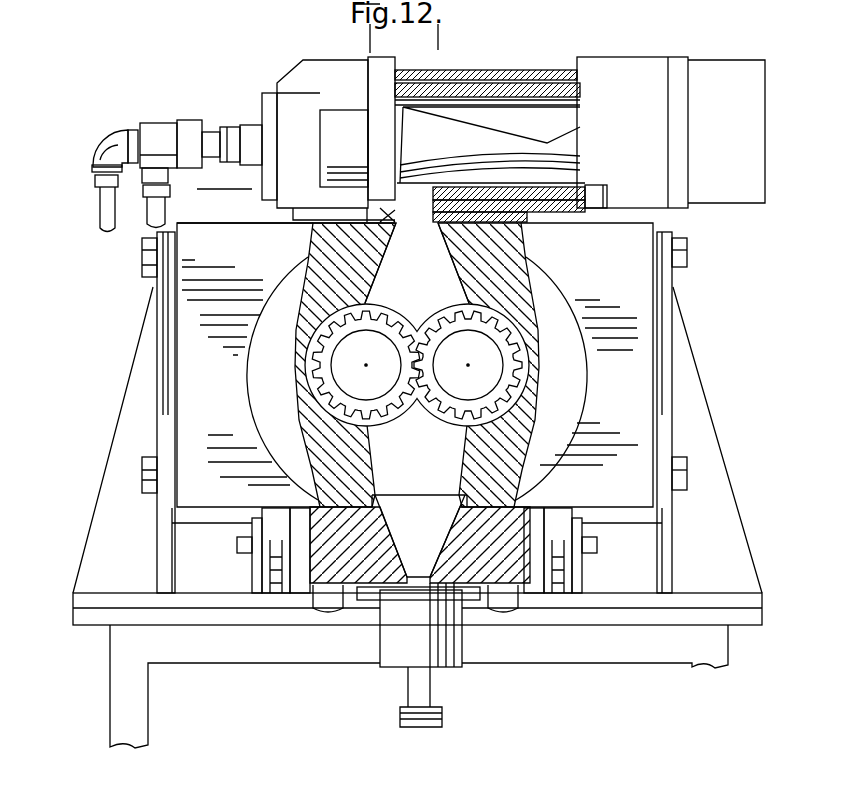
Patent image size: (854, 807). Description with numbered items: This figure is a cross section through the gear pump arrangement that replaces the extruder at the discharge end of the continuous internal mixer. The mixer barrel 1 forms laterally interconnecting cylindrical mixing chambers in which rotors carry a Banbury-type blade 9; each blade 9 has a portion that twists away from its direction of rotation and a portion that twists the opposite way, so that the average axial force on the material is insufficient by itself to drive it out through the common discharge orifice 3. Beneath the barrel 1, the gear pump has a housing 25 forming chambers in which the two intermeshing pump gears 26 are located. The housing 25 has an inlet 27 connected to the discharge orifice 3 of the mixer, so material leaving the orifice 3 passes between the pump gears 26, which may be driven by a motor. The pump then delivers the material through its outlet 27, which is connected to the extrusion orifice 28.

The barrel 1 is at (620, 67).
The discharge orifice 3 is at (407, 208).
The blade 9 is at (498, 118).
The housing 25 is at (183, 300).
The pump gears 26 is at (325, 365).
The inlet 27 is at (417, 273).
The extrusion orifice 28 is at (413, 697).